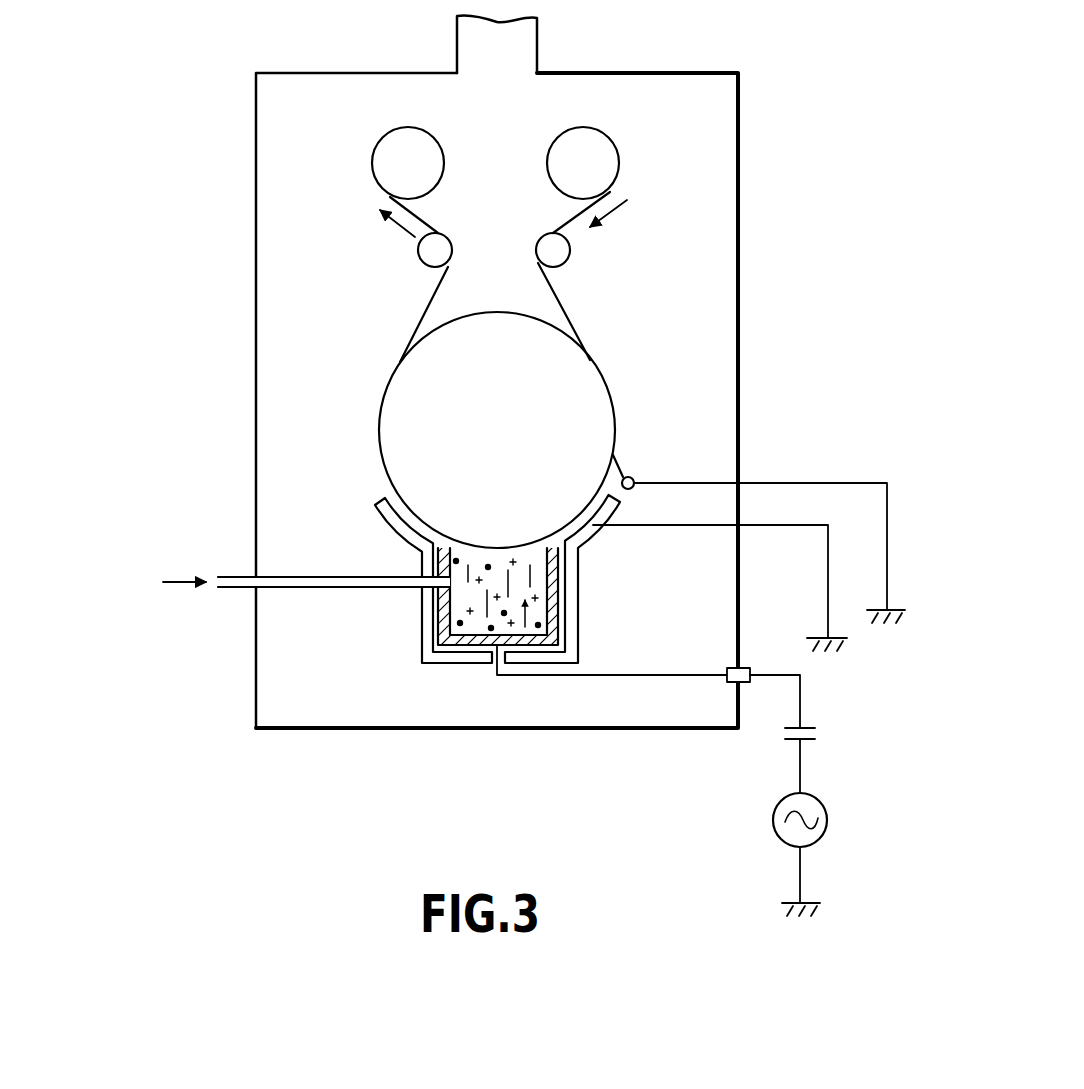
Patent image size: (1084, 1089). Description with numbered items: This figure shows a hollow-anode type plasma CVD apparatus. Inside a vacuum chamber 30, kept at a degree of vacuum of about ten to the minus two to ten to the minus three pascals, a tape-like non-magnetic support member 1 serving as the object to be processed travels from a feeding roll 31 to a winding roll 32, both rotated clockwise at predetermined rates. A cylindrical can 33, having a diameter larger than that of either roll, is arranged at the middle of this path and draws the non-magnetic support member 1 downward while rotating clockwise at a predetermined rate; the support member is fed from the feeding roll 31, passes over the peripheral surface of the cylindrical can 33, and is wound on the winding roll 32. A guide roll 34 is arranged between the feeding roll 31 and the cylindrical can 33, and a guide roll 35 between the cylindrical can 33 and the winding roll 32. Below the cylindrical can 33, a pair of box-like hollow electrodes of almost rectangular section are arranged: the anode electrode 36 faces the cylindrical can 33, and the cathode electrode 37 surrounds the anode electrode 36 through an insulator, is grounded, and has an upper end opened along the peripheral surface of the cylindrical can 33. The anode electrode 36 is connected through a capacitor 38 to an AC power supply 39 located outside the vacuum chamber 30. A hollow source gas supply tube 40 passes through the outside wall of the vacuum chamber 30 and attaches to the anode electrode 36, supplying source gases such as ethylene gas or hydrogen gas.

The non-magnetic support member 1 is at (571, 323).
The vacuum chamber 30 is at (725, 283).
The feeding roll 31 is at (587, 135).
The winding roll 32 is at (403, 133).
The cylindrical can 33 is at (603, 403).
The guide roll 34 is at (571, 252).
The guide roll 35 is at (420, 250).
The anode electrode 36 is at (440, 622).
The cathode electrode 37 is at (570, 607).
The capacitor 38 is at (808, 728).
The AC power supply 39 is at (775, 813).
The source gas supply tube 40 is at (233, 575).